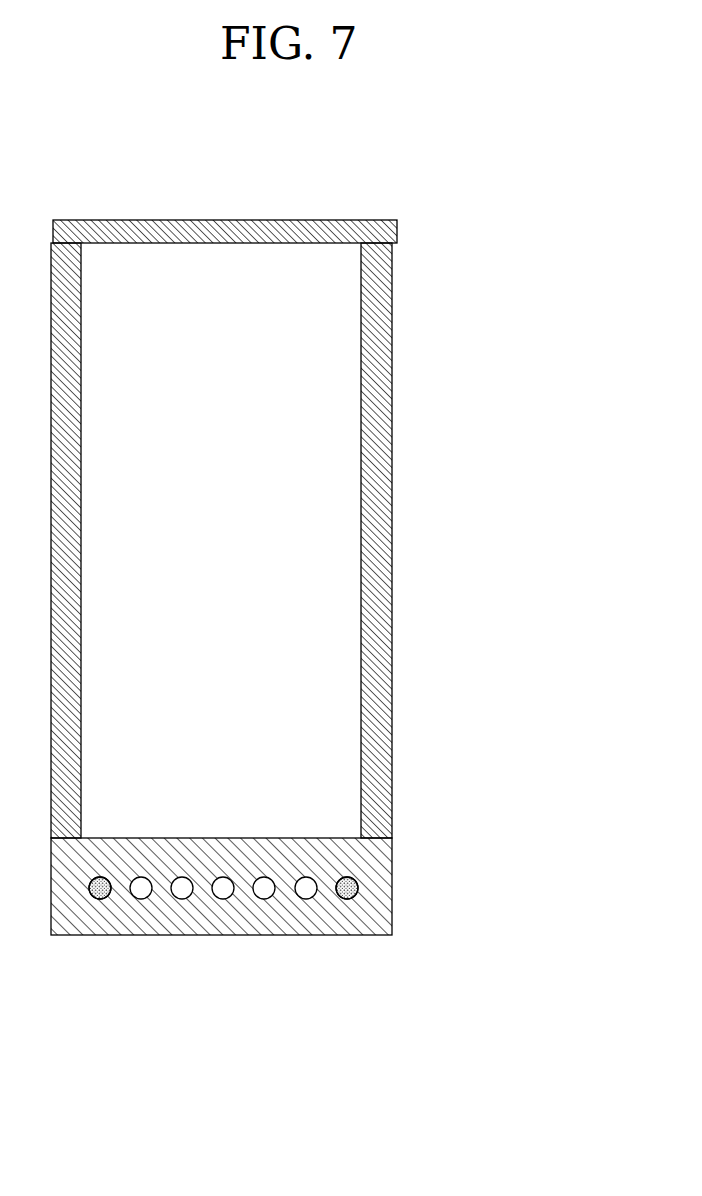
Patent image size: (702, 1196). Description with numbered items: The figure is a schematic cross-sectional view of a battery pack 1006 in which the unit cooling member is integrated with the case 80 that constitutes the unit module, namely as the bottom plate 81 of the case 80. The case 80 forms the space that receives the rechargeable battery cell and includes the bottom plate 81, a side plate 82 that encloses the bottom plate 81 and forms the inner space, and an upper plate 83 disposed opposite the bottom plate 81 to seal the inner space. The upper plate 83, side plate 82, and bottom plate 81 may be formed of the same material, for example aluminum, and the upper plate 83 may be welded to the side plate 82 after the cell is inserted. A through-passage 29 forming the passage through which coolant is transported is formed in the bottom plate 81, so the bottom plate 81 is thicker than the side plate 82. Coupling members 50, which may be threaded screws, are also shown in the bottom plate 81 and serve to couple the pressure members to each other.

The battery pack 1006 is at (313, 158).
The case 80 is at (311, 626).
The bottom plate 81 is at (276, 935).
The side plate 82 is at (392, 687).
The upper plate 83 is at (327, 243).
The through-passage 29 is at (308, 898).
The coupling member 50 is at (100, 899).